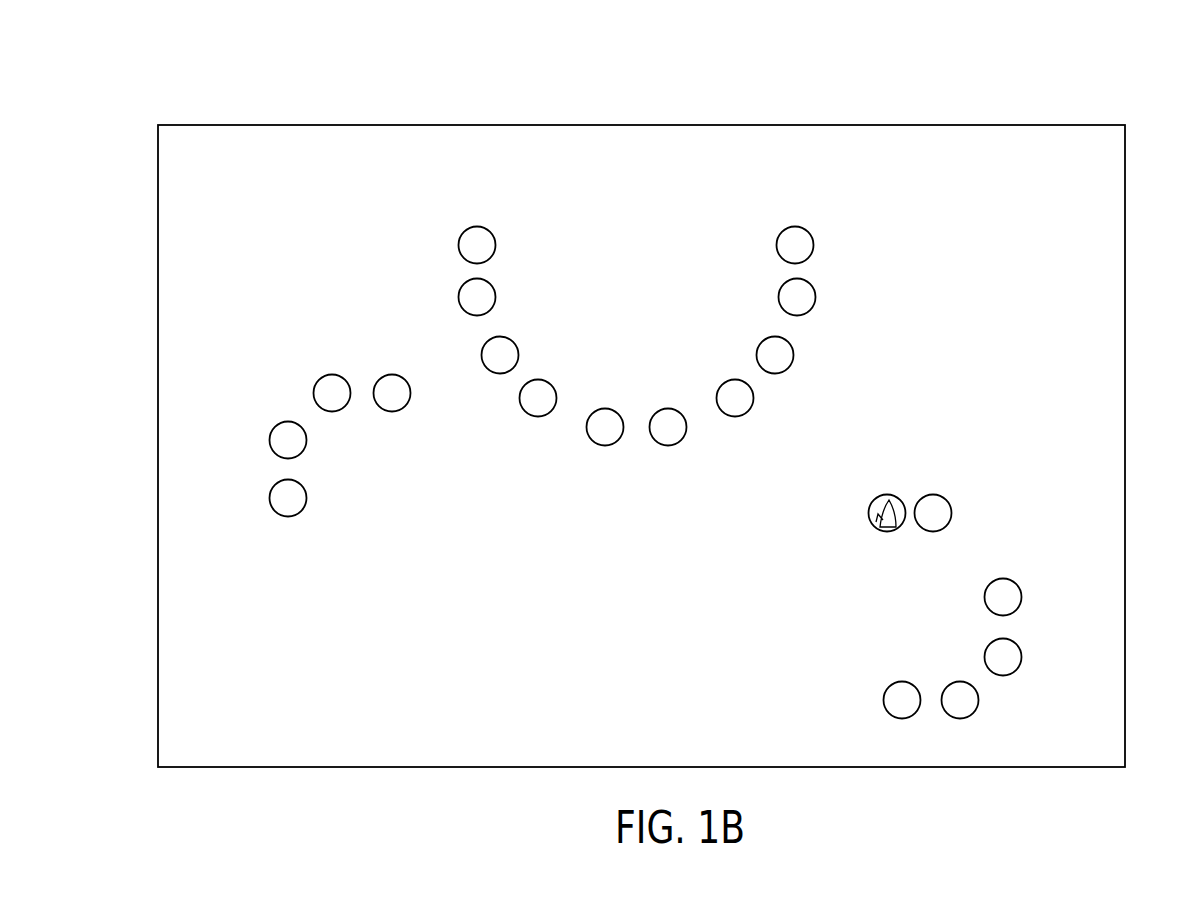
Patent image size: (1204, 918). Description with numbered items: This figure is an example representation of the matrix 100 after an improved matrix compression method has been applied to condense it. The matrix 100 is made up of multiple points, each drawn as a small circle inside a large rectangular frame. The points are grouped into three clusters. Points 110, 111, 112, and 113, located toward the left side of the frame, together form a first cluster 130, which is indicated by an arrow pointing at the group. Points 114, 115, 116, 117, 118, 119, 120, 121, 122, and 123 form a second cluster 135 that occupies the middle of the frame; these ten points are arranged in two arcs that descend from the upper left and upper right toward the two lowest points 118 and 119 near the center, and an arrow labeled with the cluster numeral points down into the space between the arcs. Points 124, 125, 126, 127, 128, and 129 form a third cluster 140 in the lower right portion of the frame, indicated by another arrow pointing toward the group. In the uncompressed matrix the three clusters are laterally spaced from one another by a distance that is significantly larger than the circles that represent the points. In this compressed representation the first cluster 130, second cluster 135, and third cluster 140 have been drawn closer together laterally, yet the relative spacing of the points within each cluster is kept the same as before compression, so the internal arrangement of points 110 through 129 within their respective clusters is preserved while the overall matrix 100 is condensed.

The matrix 100 is at (1095, 88).
The point 110 is at (306, 498).
The point 111 is at (306, 440).
The point 112 is at (313, 393).
The point 113 is at (388, 375).
The point 114 is at (466, 231).
The point 115 is at (458, 297).
The point 116 is at (482, 355).
The point 117 is at (522, 408).
The point 118 is at (590, 436).
The point 119 is at (683, 436).
The point 120 is at (753, 398).
The point 121 is at (793, 355).
The point 122 is at (815, 297).
The point 123 is at (801, 227).
The point 124 is at (877, 497).
The point 125 is at (944, 497).
The point 126 is at (1012, 581).
The point 127 is at (990, 644).
The point 128 is at (968, 717).
The point 129 is at (887, 716).
The first cluster 130 is at (388, 455).
The second cluster 135 is at (638, 324).
The third cluster 140 is at (906, 592).